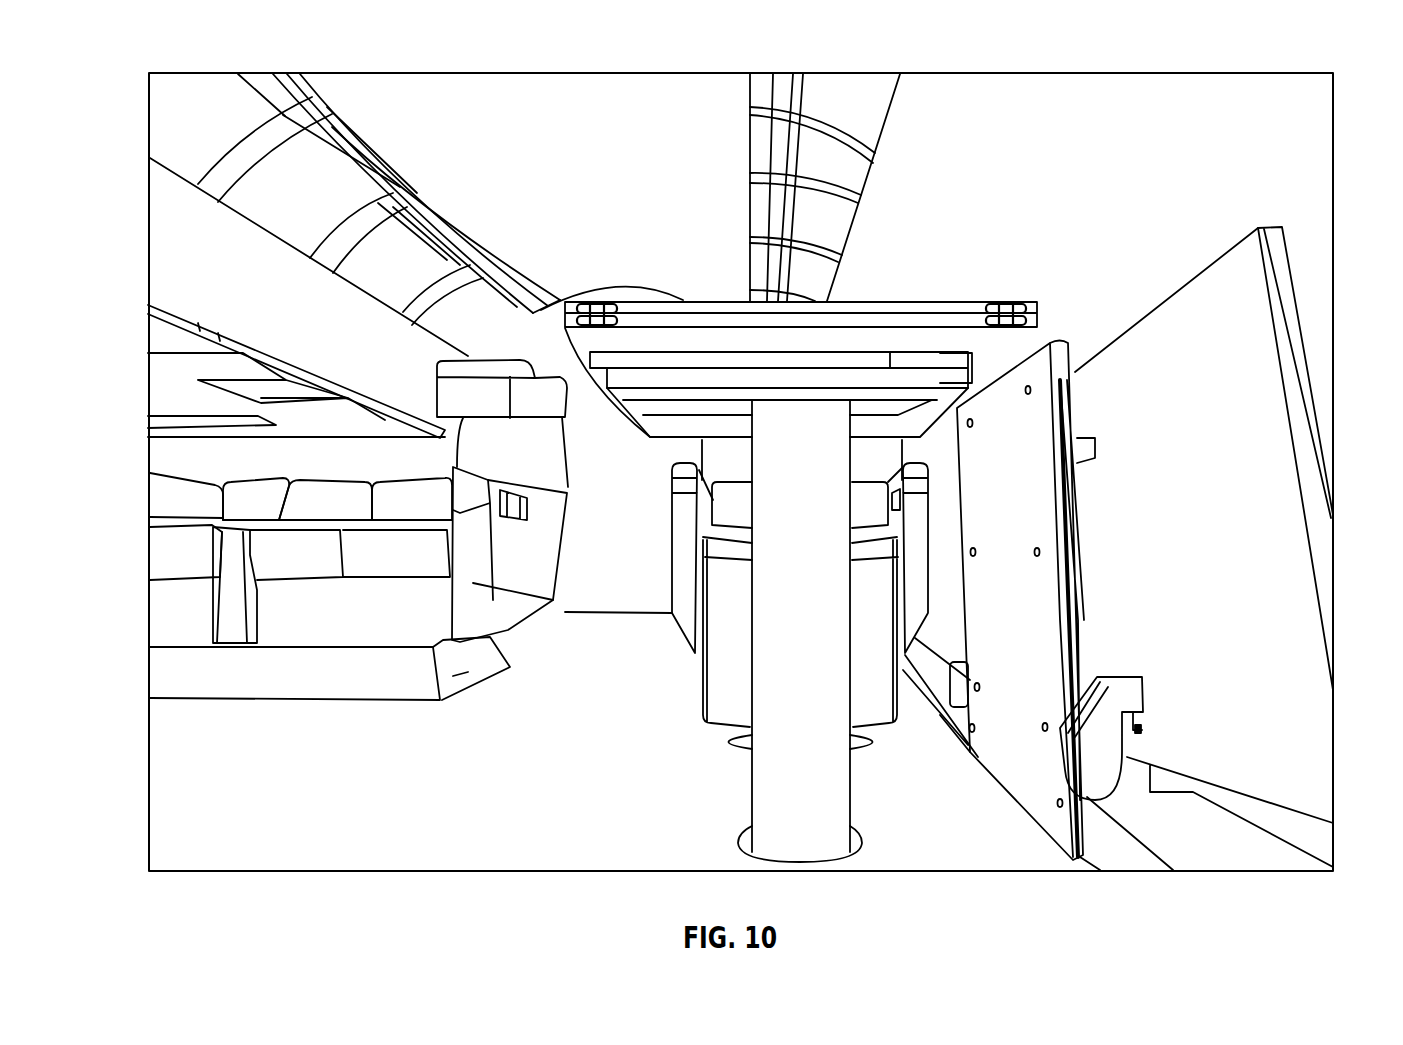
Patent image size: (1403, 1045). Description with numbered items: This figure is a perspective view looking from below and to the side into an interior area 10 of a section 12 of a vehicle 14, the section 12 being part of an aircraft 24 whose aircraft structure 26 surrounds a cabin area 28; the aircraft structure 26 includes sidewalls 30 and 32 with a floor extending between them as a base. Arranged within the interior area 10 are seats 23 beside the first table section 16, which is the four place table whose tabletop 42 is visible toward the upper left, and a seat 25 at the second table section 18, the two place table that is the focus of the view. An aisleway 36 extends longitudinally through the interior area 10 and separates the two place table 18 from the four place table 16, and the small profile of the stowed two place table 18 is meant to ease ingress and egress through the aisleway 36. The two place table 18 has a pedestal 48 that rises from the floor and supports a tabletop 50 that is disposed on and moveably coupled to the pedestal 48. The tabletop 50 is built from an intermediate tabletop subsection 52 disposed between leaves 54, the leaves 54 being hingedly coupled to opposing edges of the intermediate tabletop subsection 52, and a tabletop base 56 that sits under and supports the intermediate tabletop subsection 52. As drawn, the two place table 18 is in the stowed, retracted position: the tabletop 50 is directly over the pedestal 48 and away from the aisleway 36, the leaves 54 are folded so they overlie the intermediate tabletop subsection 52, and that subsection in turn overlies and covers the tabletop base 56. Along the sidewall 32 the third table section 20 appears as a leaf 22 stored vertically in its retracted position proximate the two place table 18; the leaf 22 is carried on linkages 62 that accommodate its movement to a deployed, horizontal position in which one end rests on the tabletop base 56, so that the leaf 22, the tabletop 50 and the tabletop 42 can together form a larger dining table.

The interior area 10 is at (966, 106).
The section 12 is at (1292, 238).
The vehicle 14 is at (1216, 67).
The first table section 16 is at (218, 333).
The second table section 18 is at (722, 307).
The third table section 20 is at (1260, 373).
The leaf 22 is at (1268, 528).
The seats 23 is at (493, 387).
The aircraft 24 is at (1309, 67).
The seats 25 is at (725, 667).
The aircraft structure 26 is at (1302, 282).
The cabin area 28 is at (1025, 110).
The sidewall 30 is at (173, 260).
The sidewall 32 is at (1305, 330).
The aisleway 36 is at (543, 659).
The tabletop 42 is at (296, 368).
The pedestal 48 is at (832, 810).
The tabletop 50 is at (1037, 307).
The intermediate tabletop subsection 52 is at (860, 330).
The leaves 54 is at (913, 307).
The tabletop base 56 is at (960, 382).
The linkages 62 is at (1107, 757).